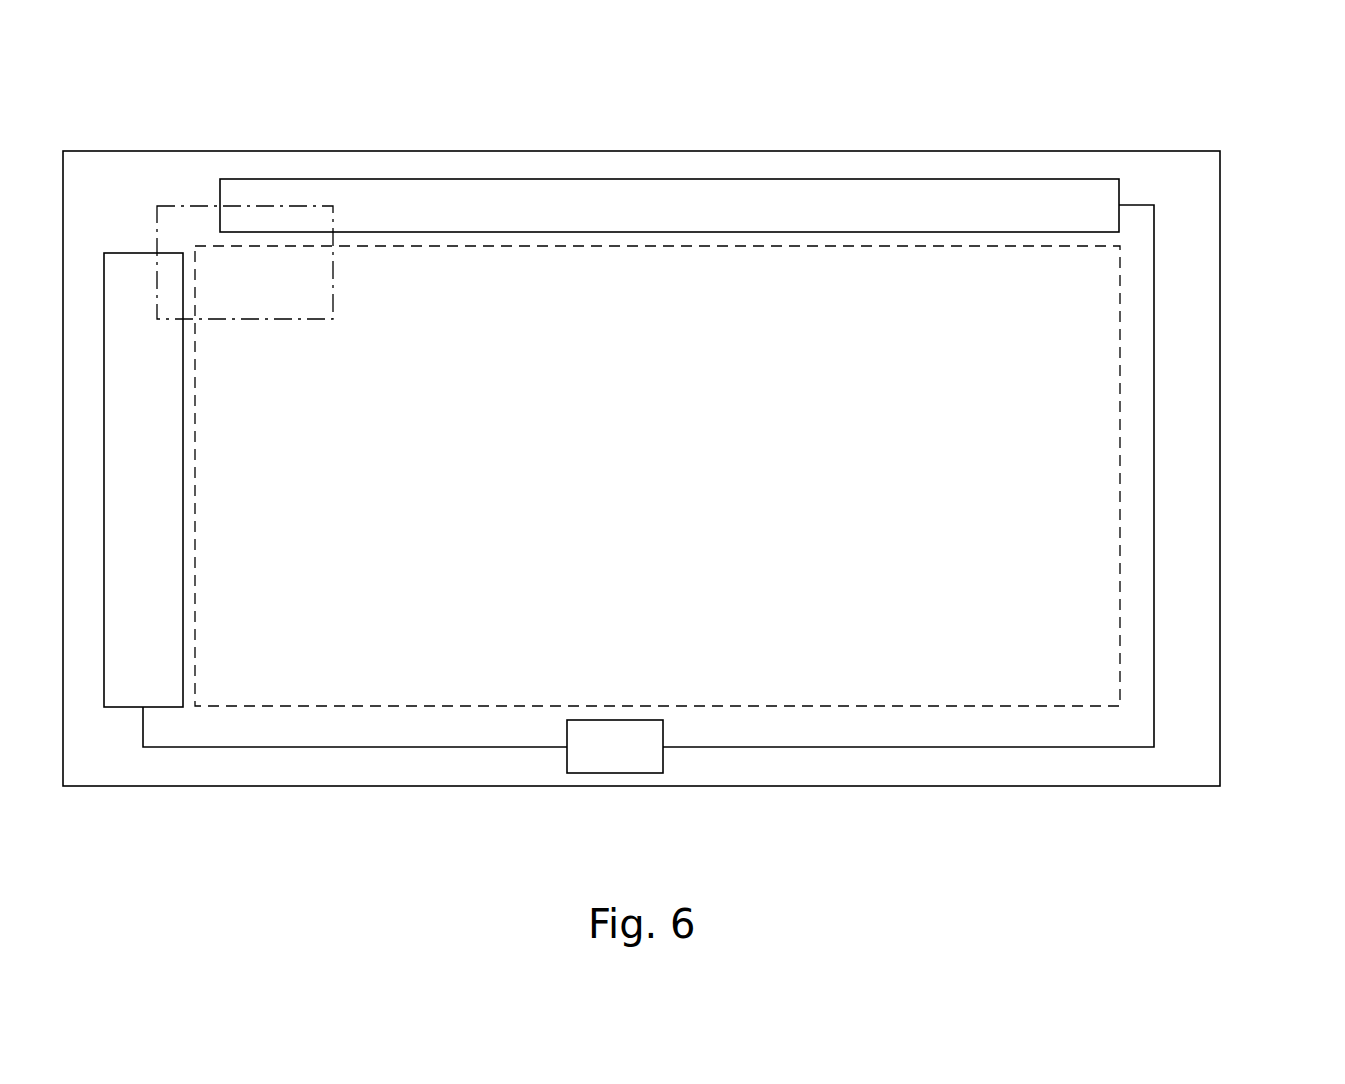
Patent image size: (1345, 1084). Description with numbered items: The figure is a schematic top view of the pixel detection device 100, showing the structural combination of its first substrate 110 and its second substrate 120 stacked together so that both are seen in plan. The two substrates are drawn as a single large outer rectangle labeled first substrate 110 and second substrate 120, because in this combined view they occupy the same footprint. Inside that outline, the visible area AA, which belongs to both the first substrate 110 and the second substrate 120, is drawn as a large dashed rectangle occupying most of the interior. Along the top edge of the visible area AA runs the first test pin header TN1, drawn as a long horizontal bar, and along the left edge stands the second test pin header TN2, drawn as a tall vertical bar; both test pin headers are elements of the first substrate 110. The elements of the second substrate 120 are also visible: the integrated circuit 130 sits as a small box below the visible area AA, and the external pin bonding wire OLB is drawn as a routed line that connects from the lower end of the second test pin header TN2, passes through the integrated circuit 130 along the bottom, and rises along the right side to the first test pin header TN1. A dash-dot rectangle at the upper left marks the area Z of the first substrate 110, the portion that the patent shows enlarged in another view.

The pixel detection device 100 is at (1291, 57).
The first substrate 110 is at (641, 425).
The second substrate 120 is at (907, 151).
The integrated circuit 130 is at (638, 761).
The first test pin header TN1 is at (700, 220).
The second test pin header TN2 is at (173, 495).
The visible area AA is at (1120, 270).
The external pin bonding wire OLB is at (1045, 747).
The area Z is at (283, 320).